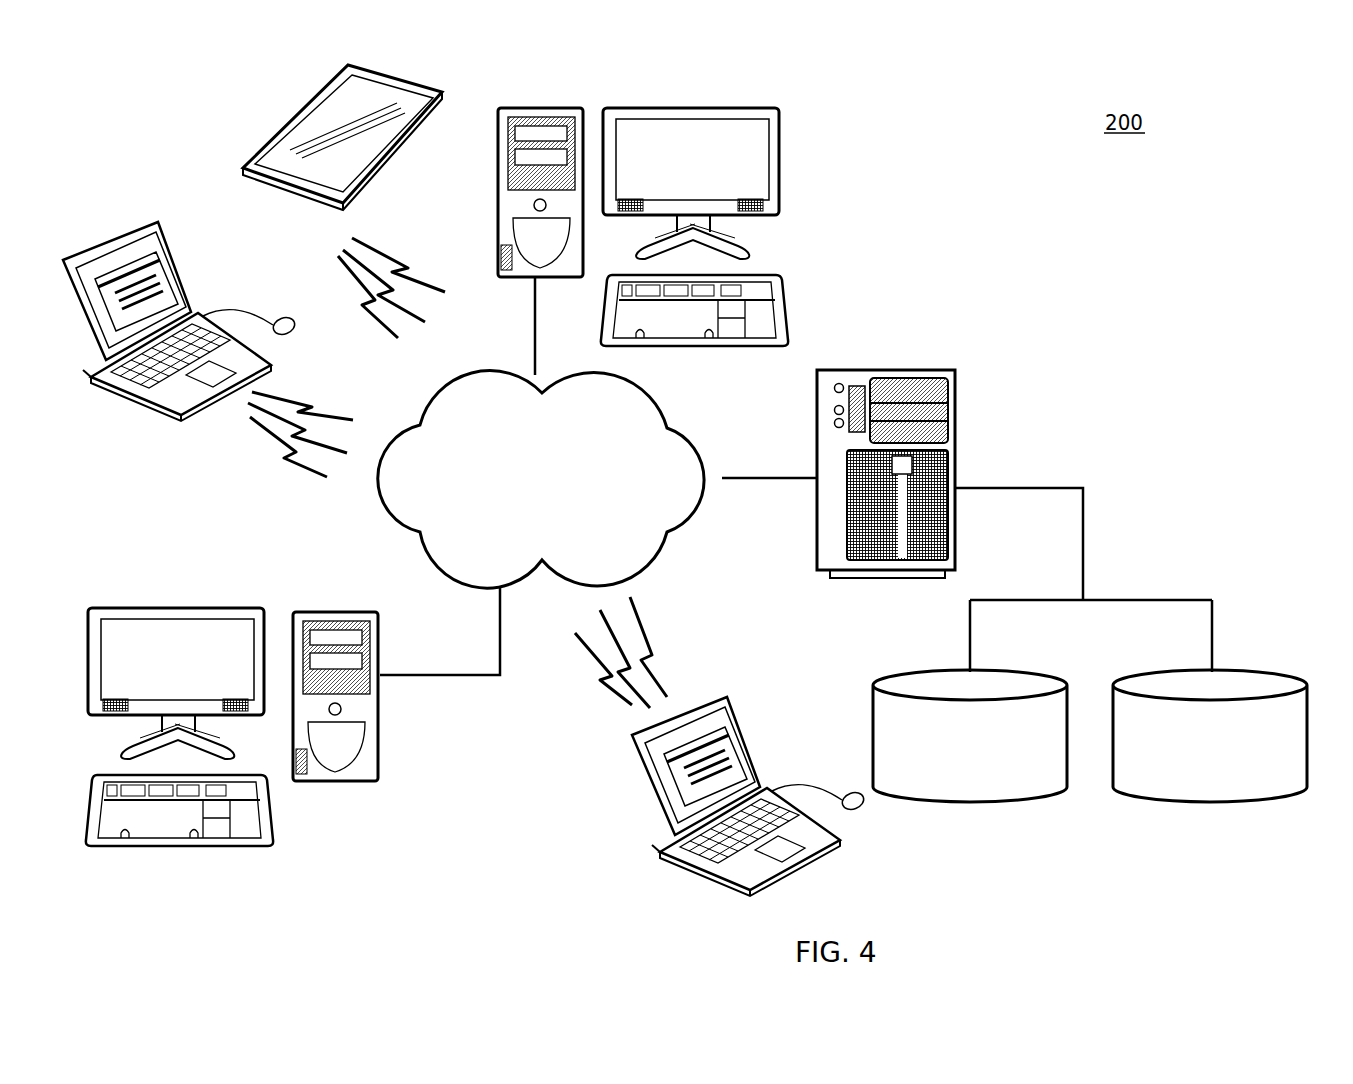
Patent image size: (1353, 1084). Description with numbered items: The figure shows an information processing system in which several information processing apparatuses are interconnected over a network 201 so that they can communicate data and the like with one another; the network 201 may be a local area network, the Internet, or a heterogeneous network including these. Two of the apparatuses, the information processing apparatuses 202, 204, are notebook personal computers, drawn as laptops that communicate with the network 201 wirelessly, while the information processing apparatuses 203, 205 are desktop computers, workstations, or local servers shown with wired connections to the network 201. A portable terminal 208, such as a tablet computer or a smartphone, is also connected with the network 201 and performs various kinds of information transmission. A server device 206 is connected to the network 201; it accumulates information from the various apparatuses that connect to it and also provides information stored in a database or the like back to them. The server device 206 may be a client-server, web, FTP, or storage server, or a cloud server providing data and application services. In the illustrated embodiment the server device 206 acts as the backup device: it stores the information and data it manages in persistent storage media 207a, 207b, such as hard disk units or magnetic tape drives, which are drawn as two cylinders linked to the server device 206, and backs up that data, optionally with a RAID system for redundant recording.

The network 201 is at (650, 420).
The information processing apparatus 202 is at (173, 257).
The information processing apparatus 203 is at (380, 745).
The information processing apparatus 204 is at (735, 712).
The information processing apparatus 205 is at (780, 160).
The server device 206 is at (955, 395).
The persistent storage medium 207a is at (995, 682).
The persistent storage medium 207b is at (1240, 682).
The portable terminal 208 is at (397, 77).